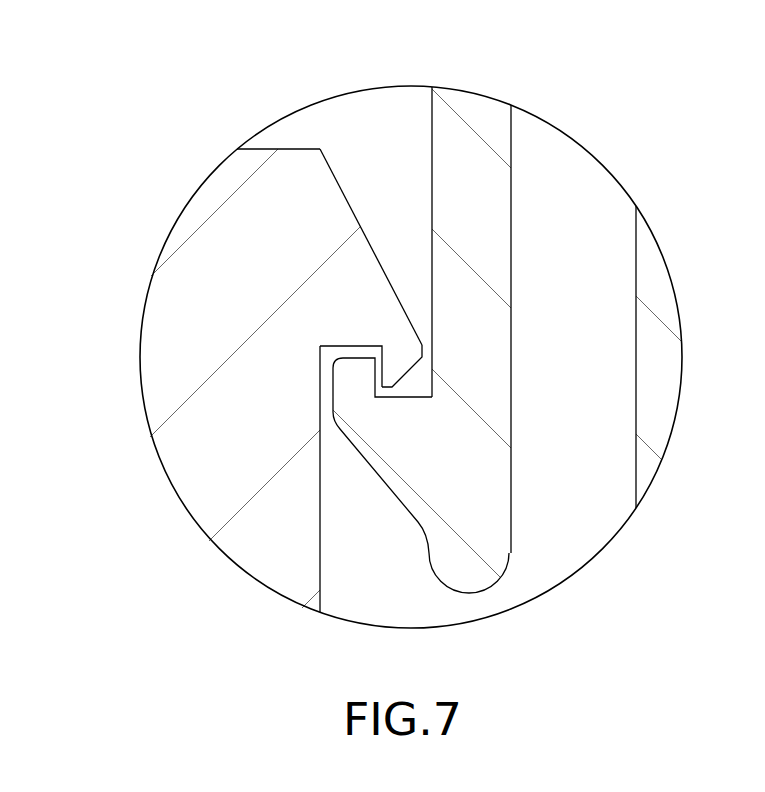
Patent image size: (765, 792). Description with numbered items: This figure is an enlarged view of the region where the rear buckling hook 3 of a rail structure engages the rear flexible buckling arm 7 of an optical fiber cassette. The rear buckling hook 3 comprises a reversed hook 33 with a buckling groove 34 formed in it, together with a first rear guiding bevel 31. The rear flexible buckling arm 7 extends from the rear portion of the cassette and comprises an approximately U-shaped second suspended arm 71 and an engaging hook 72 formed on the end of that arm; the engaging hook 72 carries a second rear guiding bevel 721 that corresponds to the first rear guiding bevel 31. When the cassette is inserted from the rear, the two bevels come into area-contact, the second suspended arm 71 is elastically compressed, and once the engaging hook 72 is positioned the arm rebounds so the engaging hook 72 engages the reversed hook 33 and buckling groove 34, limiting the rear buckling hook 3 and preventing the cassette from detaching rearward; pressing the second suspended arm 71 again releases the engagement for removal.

The rear buckling hook 3 is at (363, 298).
The first rear guiding bevel 31 is at (372, 245).
The reversed hook 33 is at (408, 350).
The buckling groove 34 is at (347, 350).
The rear flexible buckling arm 7 is at (477, 118).
The second suspended arm 71 is at (511, 205).
The engaging hook 72 is at (357, 396).
The second rear guiding bevel 721 is at (375, 473).